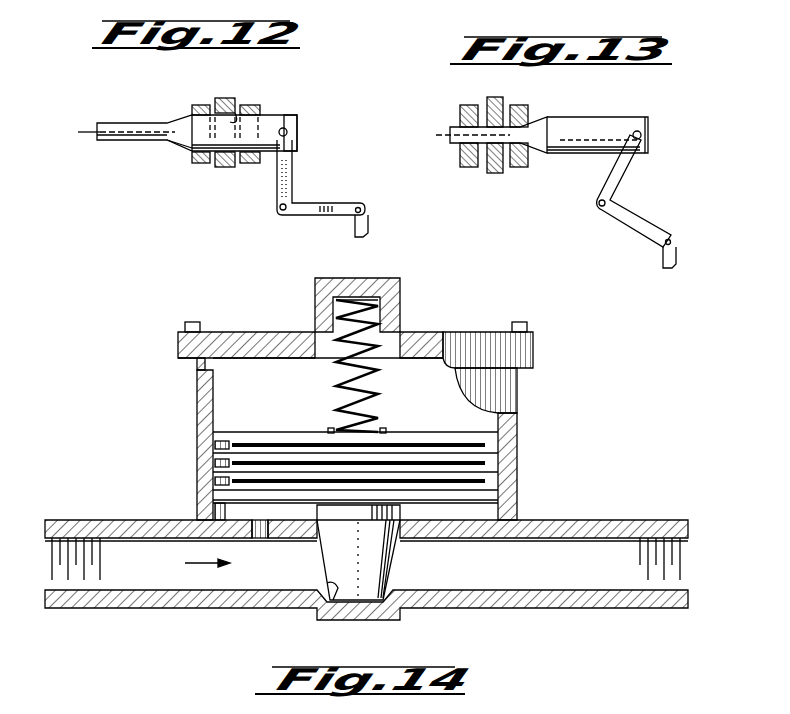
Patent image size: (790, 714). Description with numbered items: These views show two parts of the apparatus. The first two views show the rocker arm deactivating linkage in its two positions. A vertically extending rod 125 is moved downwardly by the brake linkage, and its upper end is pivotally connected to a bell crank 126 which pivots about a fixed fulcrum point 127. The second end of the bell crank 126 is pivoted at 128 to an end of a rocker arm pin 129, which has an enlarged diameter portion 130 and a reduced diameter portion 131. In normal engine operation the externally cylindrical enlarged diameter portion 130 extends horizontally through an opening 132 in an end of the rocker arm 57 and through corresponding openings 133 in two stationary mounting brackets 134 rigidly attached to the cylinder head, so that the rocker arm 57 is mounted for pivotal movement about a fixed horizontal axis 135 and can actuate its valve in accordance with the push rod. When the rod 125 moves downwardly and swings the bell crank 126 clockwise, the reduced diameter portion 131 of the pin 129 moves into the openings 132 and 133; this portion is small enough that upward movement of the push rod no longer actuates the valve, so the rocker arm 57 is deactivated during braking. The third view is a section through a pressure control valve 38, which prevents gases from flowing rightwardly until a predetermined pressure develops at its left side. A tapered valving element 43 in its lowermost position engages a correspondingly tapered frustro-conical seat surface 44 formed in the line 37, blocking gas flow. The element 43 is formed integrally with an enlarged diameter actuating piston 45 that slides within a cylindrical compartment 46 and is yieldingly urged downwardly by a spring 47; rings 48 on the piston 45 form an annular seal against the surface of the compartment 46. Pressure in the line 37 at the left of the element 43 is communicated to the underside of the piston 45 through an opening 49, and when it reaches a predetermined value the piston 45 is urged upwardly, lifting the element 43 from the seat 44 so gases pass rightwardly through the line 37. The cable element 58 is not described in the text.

In FIG. 14, the line 37 is at (205, 606).
In FIG. 14, the pressure control valve 38 is at (551, 407).
In FIG. 14, the tapered valving element 43 is at (400, 566).
In FIG. 14, the frustro-conical seat surface 44 is at (328, 598).
In FIG. 14, the actuating piston 45 is at (500, 503).
In FIG. 14, the cylindrical compartment 46 is at (500, 480).
In FIG. 14, the spring 47 is at (380, 412).
In FIG. 14, the rings 48 is at (500, 459).
In FIG. 14, the opening 49 is at (260, 541).
In FIG. 12, the rocker arm 57 is at (224, 98).
In FIG. 13, the rocker arm 57 is at (490, 173).
In FIG. 12, the cable 58 is at (90, 150).
In FIG. 12, the vertically extending rod 125 is at (363, 230).
In FIG. 13, the vertically extending rod 125 is at (670, 260).
In FIG. 12, the bell crank 126 is at (315, 203).
In FIG. 13, the bell crank 126 is at (628, 210).
In FIG. 12, the fixed fulcrum point 127 is at (283, 211).
In FIG. 13, the fixed fulcrum point 127 is at (601, 208).
In FIG. 12, the pivot 128 is at (287, 132).
In FIG. 13, the pivot 128 is at (641, 135).
In FIG. 12, the rocker arm pin 129 is at (296, 115).
In FIG. 13, the rocker arm pin 129 is at (648, 126).
In FIG. 12, the enlarged diameter portion 130 is at (280, 115).
In FIG. 13, the enlarged diameter portion 130 is at (645, 120).
In FIG. 12, the reduced diameter portion 131 is at (127, 123).
In FIG. 13, the reduced diameter portion 131 is at (456, 143).
In FIG. 12, the opening 132 is at (229, 115).
In FIG. 13, the opening 132 is at (498, 118).
In FIG. 12, the openings 133 is at (190, 117).
In FIG. 13, the openings 133 is at (462, 118).
In FIG. 12, the stationary mounting brackets 134 is at (195, 163).
In FIG. 13, the stationary mounting brackets 134 is at (465, 105).
In FIG. 12, the fixed horizontal axis 135 is at (112, 133).